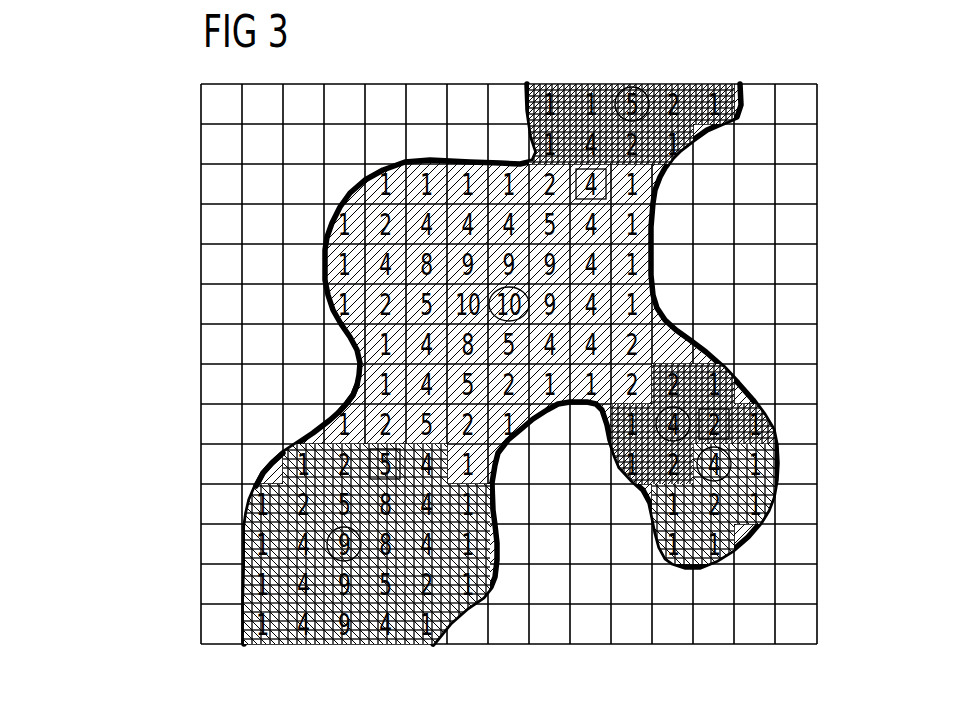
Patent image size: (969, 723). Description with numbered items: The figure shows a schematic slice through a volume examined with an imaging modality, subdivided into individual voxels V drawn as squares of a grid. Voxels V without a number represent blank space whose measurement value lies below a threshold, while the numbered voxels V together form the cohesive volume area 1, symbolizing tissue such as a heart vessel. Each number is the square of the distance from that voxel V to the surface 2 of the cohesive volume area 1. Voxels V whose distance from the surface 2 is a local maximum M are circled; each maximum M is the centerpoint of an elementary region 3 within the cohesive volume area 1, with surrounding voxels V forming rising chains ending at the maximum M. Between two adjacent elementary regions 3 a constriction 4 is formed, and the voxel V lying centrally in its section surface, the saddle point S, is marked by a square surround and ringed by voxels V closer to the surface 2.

The cohesive volume area 1 is at (777, 420).
The surface 2 is at (693, 337).
The elementary region 3 is at (263, 467).
The constriction 4 is at (340, 392).
The local maximum M is at (648, 84).
The saddle point S is at (608, 192).
The voxel V is at (253, 547).